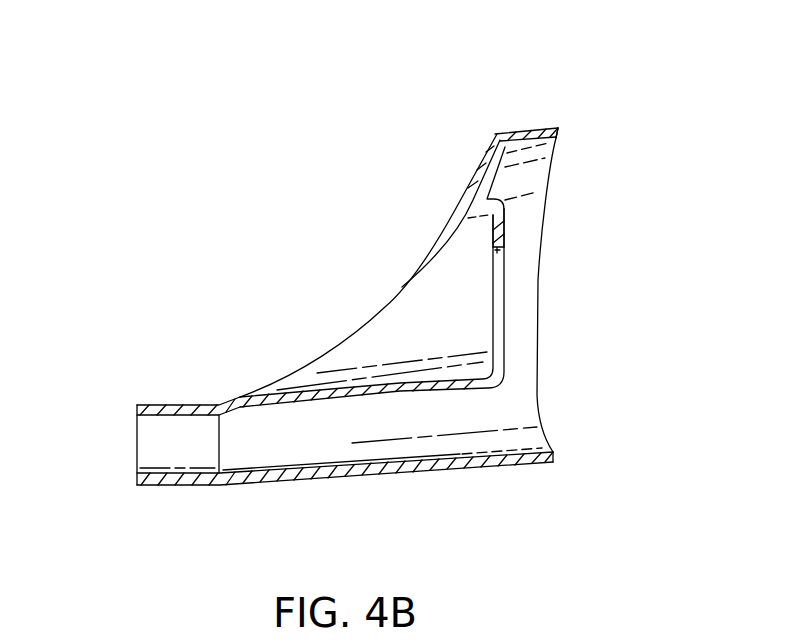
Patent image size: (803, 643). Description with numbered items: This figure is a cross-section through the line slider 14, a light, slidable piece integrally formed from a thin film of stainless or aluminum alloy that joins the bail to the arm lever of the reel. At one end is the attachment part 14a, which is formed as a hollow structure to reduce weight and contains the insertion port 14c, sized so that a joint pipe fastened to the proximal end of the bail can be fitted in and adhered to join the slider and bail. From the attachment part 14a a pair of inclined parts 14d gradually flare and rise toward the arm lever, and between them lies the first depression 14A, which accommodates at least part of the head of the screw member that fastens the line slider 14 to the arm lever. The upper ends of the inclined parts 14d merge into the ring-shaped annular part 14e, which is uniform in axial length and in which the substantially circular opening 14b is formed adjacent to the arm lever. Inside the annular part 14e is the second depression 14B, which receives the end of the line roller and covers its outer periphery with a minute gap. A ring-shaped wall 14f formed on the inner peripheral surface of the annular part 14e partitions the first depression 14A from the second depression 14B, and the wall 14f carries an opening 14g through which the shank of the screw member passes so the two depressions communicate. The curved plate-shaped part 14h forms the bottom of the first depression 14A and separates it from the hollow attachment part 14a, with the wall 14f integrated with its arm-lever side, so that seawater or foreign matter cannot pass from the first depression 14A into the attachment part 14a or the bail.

The line slider 14 is at (393, 123).
The attachment part 14a is at (155, 405).
The opening 14b is at (558, 130).
The insertion port 14c is at (137, 407).
The inclined parts 14d is at (415, 268).
The annular part 14e is at (521, 128).
The wall 14f is at (505, 225).
The opening 14g is at (503, 258).
The plate-shaped part 14h is at (377, 387).
The first depression 14A is at (470, 232).
The second depression 14B is at (520, 177).